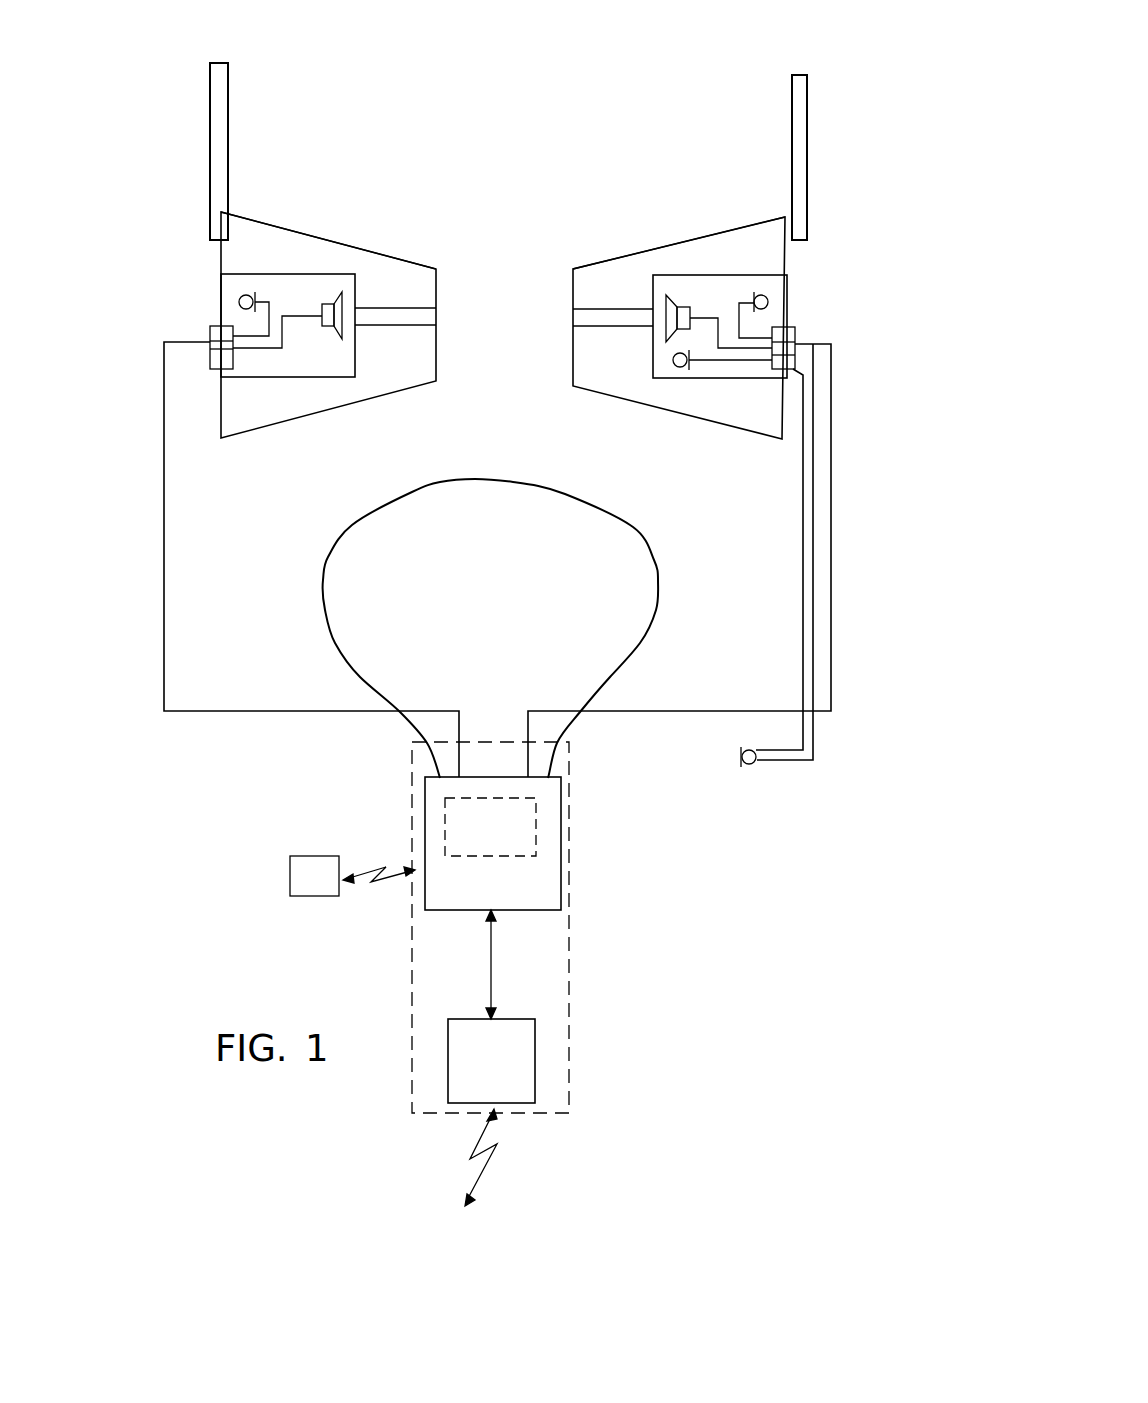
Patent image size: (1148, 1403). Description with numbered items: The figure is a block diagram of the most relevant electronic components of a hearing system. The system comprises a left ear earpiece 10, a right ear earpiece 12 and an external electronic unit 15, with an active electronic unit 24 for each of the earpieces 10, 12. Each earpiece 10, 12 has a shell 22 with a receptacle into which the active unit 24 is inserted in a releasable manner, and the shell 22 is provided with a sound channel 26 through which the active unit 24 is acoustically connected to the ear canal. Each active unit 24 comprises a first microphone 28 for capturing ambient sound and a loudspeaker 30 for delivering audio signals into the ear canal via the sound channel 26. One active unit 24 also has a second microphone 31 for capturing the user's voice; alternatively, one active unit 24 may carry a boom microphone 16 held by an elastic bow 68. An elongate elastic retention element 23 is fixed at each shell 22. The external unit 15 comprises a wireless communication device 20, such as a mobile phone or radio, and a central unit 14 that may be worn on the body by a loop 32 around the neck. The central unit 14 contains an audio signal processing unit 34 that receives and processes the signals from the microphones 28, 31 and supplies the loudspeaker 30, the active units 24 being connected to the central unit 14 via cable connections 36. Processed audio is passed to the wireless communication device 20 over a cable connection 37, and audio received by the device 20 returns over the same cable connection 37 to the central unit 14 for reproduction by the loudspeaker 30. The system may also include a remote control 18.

The left ear earpiece 10 is at (350, 238).
The right ear earpiece 12 is at (651, 237).
The central unit 14 is at (570, 831).
The external electronic unit 15 is at (577, 1035).
The boom microphone 16 is at (757, 763).
The remote control 18 is at (329, 889).
The wireless communication device 20 is at (506, 1072).
The shell 22 is at (382, 278).
The elongate elastic retention element 23 is at (214, 90).
The active electronic unit 24 is at (267, 275).
The sound channel 26 is at (423, 317).
The first microphone 28 is at (239, 302).
The loudspeaker 30 is at (336, 303).
The second microphone 31 is at (680, 367).
The loop 32 is at (488, 481).
The audio signal processing unit 34 is at (505, 839).
The cable connections 36 is at (164, 562).
The cable connection 37 is at (491, 962).
The elastic bow 68 is at (813, 607).